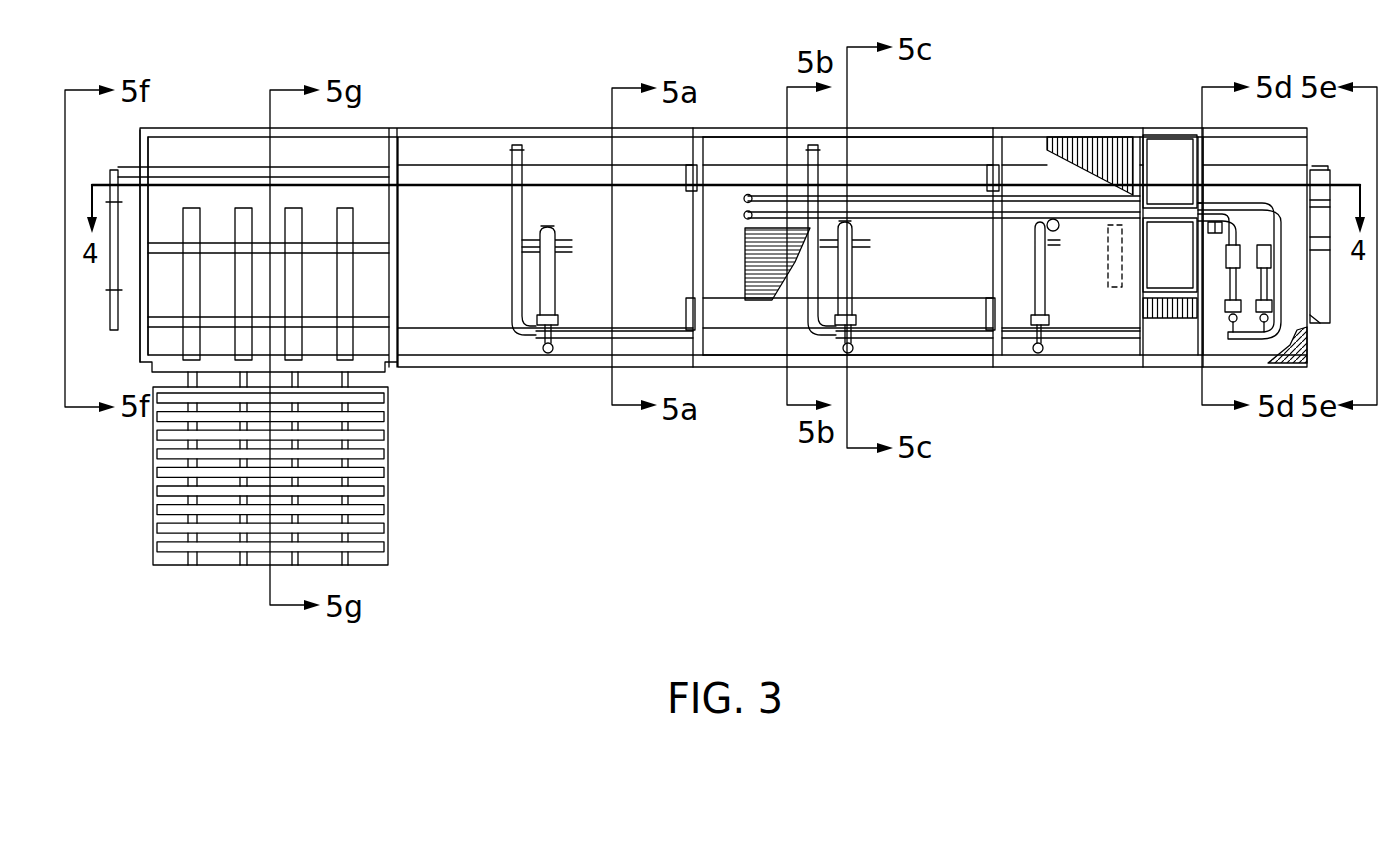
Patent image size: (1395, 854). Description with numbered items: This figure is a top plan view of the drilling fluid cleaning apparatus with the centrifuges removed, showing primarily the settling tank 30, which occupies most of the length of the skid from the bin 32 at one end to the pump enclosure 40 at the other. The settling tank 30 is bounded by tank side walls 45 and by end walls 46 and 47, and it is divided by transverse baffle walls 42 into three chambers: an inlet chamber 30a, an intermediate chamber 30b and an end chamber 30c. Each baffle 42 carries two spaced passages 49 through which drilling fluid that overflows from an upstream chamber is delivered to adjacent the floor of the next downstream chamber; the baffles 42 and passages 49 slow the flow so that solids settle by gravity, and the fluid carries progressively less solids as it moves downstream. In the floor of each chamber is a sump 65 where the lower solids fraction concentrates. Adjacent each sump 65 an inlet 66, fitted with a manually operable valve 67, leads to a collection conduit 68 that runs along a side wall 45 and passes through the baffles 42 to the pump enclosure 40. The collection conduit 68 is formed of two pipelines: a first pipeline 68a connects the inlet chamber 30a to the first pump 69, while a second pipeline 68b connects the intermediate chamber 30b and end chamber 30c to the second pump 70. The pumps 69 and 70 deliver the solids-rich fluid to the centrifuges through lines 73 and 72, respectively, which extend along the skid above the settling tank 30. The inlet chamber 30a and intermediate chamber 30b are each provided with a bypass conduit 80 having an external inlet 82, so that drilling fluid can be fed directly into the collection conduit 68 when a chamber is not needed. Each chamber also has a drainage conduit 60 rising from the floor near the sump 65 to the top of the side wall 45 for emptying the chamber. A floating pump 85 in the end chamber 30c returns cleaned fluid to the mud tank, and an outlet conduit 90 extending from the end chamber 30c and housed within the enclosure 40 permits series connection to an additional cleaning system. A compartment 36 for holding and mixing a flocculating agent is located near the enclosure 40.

The settling tank 30 is at (748, 368).
The inlet chamber 30a is at (480, 243).
The intermediate chamber 30b is at (921, 233).
The end chamber 30c is at (1070, 232).
The bin 32 is at (355, 195).
The compartment 36 is at (1170, 225).
The enclosure 40 is at (1306, 148).
The baffle wall 42 is at (684, 140).
The tank side wall 45 is at (908, 134).
The end wall 46 is at (396, 290).
The end wall 47 is at (1205, 160).
The passage 49 is at (688, 193).
The drainage conduit 60 is at (553, 353).
The sump 65 is at (558, 223).
The inlet 66 is at (546, 222).
The valve 67 is at (546, 318).
The collection conduit 68 is at (1098, 339).
The first pipeline 68a is at (588, 339).
The second pipeline 68b is at (909, 339).
The first pump 69 is at (1227, 265).
The second pump 70 is at (1271, 263).
The line 72 is at (1238, 203).
The line 73 is at (1213, 233).
The bypass conduit 80 is at (516, 145).
The inlet 82 is at (525, 157).
The floating pump 85 is at (1108, 273).
The outlet conduit 90 is at (1200, 249).